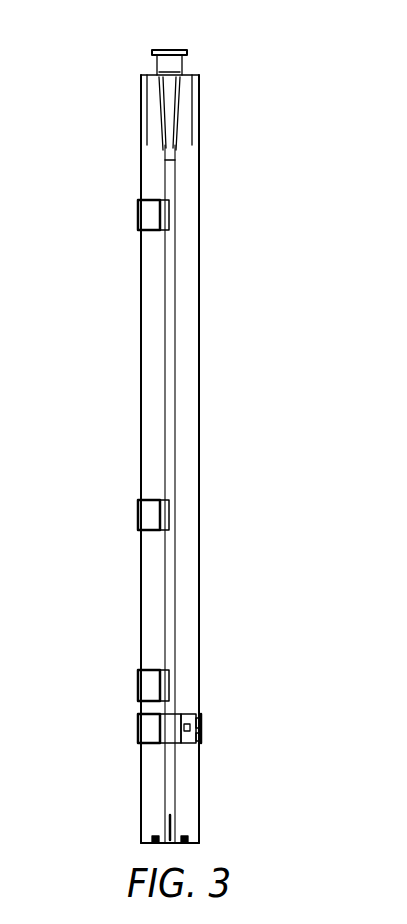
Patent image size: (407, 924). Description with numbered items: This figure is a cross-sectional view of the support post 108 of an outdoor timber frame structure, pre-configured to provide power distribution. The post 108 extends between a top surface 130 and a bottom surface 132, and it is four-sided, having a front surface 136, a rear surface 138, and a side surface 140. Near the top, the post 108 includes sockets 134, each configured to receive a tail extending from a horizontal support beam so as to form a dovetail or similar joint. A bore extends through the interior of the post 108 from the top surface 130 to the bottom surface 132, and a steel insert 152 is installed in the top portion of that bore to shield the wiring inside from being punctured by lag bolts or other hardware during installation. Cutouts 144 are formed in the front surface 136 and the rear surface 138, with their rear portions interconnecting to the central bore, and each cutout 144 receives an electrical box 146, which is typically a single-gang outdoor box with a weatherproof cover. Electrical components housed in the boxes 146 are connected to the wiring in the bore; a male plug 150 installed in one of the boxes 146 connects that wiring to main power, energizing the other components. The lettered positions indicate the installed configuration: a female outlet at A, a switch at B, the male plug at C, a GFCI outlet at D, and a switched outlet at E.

The post 108 is at (213, 241).
The top surface 130 is at (195, 75).
The bottom surface 132 is at (197, 847).
The sockets 134 is at (197, 105).
The front surface 136 is at (140, 390).
The rear surface 138 is at (200, 390).
The side surface 140 is at (175, 337).
The cutouts 144 is at (172, 213).
The electrical box 146 is at (157, 60).
The male plug 150 is at (201, 725).
The steel insert 152 is at (172, 158).
The female outlet A is at (140, 690).
The switch B is at (143, 510).
The male plug C is at (201, 714).
The GFCI outlet D is at (140, 728).
The switched outlet E is at (160, 50).